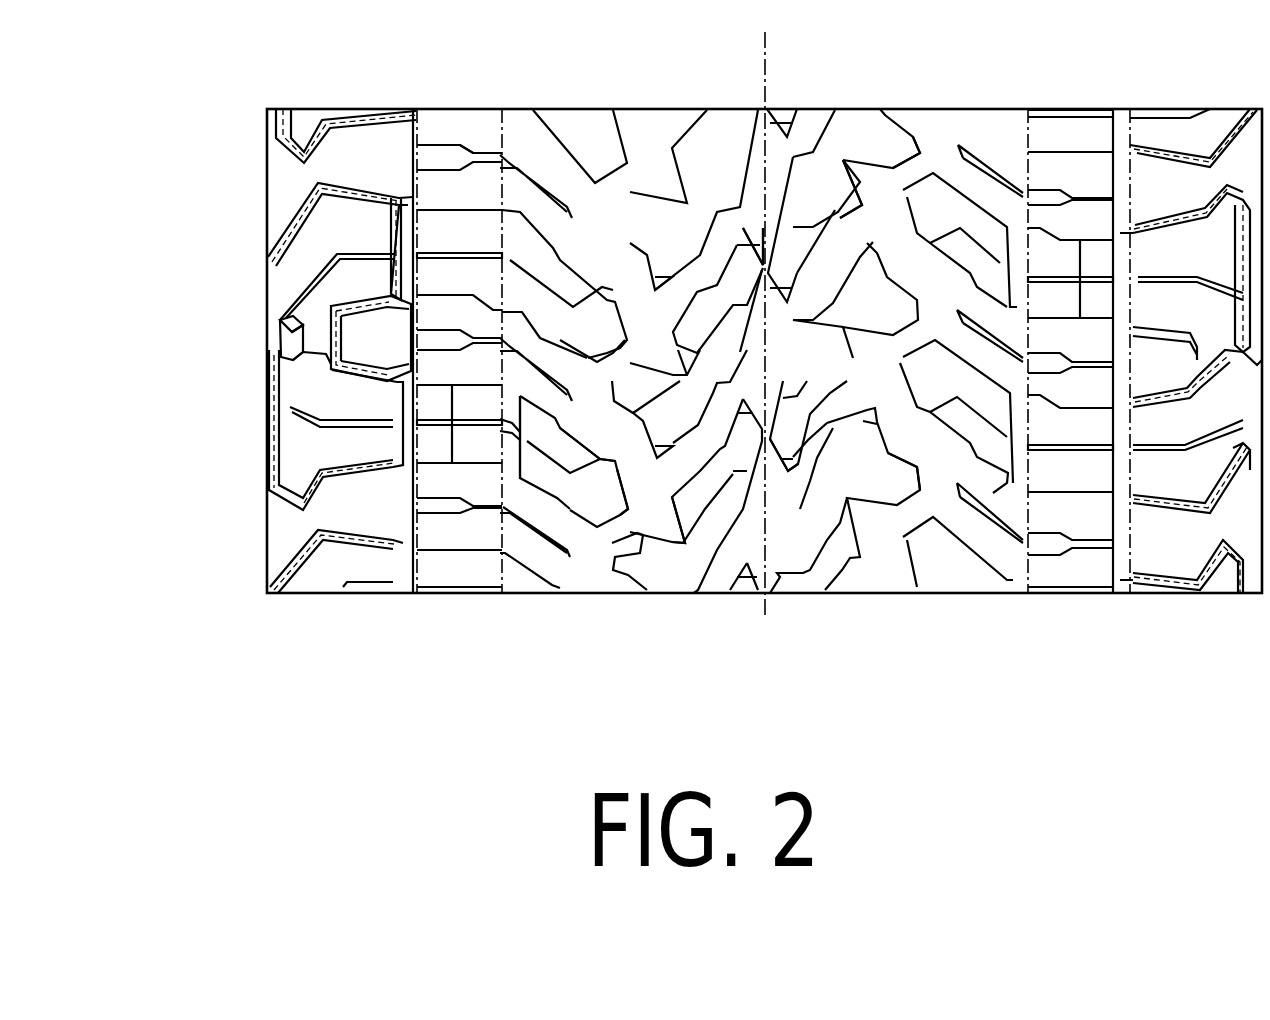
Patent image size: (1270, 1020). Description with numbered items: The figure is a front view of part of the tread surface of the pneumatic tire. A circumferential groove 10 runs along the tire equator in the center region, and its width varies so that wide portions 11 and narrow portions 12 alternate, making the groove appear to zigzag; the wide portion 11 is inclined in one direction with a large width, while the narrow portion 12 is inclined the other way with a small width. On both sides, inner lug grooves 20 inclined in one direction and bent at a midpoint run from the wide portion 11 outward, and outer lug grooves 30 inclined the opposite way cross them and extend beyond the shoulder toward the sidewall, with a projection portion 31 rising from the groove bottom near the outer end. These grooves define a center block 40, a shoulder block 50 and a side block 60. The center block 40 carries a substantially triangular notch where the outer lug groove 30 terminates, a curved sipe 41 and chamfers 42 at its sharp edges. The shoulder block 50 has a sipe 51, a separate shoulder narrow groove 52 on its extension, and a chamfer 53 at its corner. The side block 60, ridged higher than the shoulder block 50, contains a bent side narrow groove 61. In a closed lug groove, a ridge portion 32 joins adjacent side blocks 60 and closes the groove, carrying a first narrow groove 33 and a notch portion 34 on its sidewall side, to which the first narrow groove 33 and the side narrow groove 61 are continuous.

The circumferential groove 10 is at (772, 118).
The wide portion 11 is at (848, 245).
The narrow portion 12 is at (758, 268).
The inner lug groove 20 is at (912, 248).
The outer lug groove 30 is at (535, 332).
The projection portion 31 is at (440, 150).
The ridge portion 32 is at (295, 340).
The first narrow groove 33 is at (300, 360).
The notch portion 34 is at (290, 332).
The center block 40 is at (690, 570).
The sipe 41 is at (857, 414).
The chamfer 42 is at (810, 468).
The shoulder block 50 is at (513, 455).
The sipe 51 is at (566, 476).
The shoulder narrow groove 52 is at (448, 420).
The chamfer 53 is at (630, 500).
The side block 60 is at (335, 232).
The side narrow groove 61 is at (320, 268).